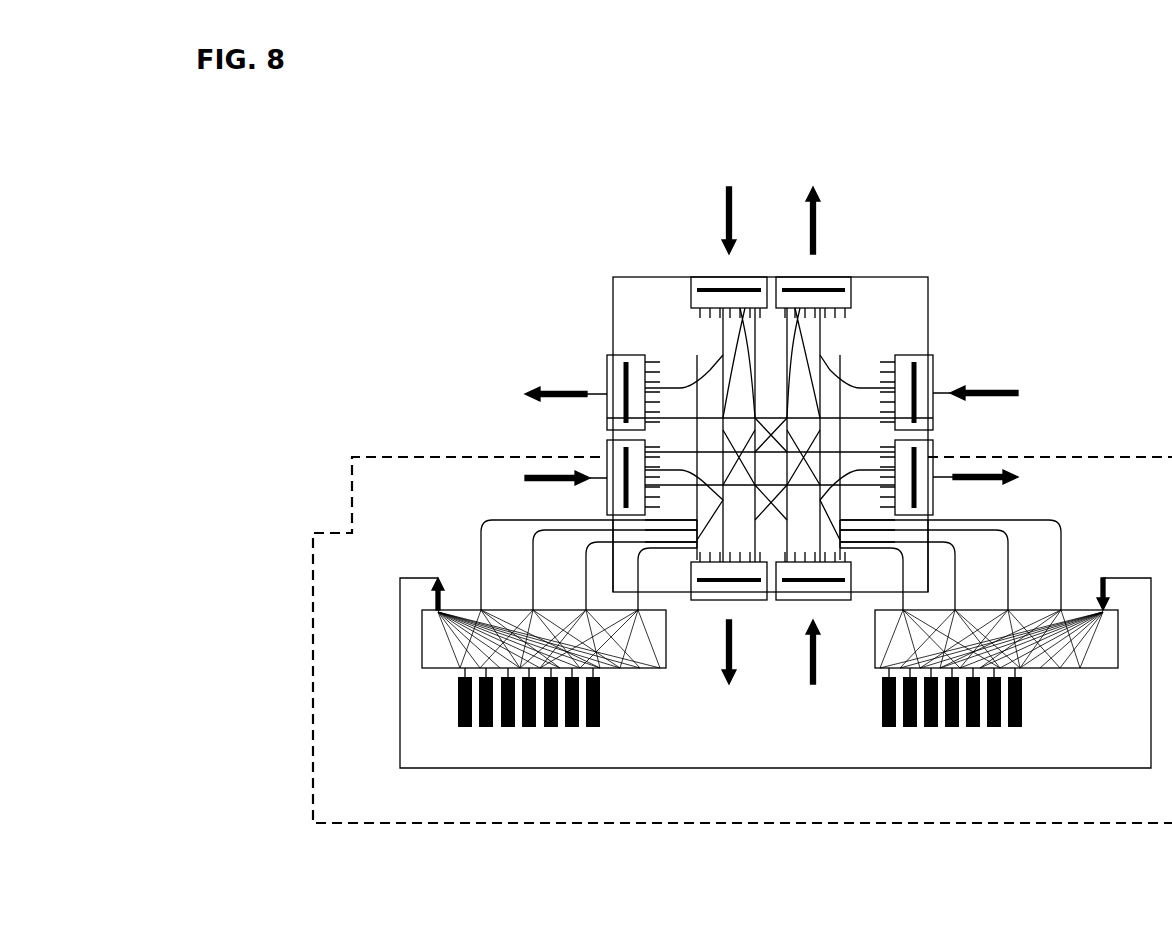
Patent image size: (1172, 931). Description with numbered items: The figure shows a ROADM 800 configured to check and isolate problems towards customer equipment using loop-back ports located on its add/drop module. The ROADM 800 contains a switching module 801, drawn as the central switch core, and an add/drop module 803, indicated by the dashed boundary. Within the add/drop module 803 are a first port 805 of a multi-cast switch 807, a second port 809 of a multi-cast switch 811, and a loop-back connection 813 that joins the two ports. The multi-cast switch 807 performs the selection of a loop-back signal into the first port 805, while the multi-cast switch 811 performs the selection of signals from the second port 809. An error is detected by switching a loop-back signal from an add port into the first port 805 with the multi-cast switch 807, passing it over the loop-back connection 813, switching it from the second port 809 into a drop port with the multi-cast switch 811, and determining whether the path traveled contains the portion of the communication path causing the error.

The ROADM 800 is at (386, 128).
The switching module 801 is at (613, 276).
The add/drop module 803 is at (313, 532).
The first port 805 is at (437, 576).
The multi-cast switch 807 is at (668, 652).
The second port 809 is at (1104, 575).
The multi-cast switch 811 is at (874, 652).
The loop-back connection 813 is at (766, 769).